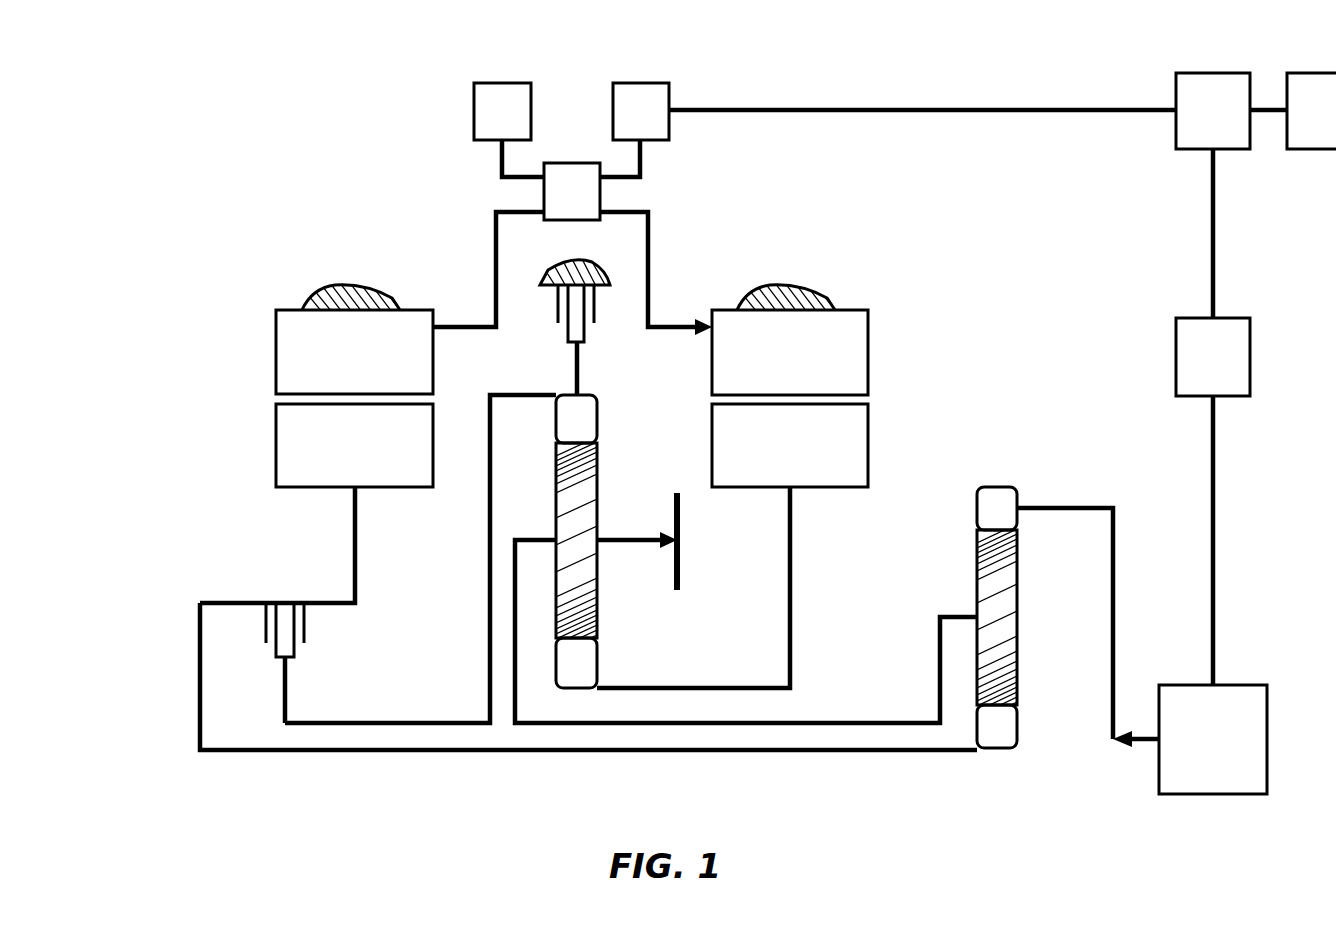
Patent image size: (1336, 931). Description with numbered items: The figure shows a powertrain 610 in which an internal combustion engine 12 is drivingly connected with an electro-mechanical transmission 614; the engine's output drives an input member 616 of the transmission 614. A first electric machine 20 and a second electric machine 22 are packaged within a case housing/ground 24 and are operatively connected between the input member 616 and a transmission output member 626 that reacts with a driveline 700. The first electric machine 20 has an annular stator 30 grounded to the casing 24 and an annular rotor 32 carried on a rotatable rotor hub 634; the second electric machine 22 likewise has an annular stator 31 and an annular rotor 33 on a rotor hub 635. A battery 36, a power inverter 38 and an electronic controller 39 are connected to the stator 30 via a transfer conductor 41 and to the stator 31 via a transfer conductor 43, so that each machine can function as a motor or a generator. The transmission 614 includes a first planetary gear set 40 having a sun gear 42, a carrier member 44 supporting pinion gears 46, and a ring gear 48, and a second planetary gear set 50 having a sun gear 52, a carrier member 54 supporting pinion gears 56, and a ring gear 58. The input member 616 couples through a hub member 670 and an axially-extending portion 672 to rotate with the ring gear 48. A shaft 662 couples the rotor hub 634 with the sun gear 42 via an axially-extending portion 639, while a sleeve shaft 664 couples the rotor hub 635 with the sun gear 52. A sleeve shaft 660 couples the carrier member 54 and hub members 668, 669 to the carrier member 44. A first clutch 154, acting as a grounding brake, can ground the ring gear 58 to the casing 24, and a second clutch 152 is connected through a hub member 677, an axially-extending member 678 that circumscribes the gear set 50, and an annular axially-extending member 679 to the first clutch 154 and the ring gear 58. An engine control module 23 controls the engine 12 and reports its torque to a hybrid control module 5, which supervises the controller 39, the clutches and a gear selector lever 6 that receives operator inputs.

The hybrid control module 5 is at (1213, 111).
The gear selector lever 6 is at (1311, 111).
The internal combustion engine 12 is at (1213, 739).
The first electric machine 20 is at (246, 413).
The second electric machine 22 is at (884, 390).
The engine control module 23 is at (1213, 357).
The case housing/ground 24 is at (343, 285).
The annular stator 30 is at (354, 352).
The annular stator 31 is at (790, 352).
The annular rotor 32 is at (354, 445).
The annular rotor 33 is at (790, 445).
The battery 36 is at (502, 111).
The power inverter 38 is at (572, 191).
The electronic controller 39 is at (641, 111).
The first planetary gear set 40 is at (1033, 593).
The transfer conductor 41 is at (467, 325).
The sun gear 42 is at (1017, 728).
The transfer conductor 43 is at (648, 290).
The carrier member 44 is at (957, 617).
The pinion gears 46 is at (1017, 576).
The ring gear 48 is at (995, 487).
The second planetary gear set 50 is at (622, 538).
The sun gear 52 is at (597, 667).
The carrier member 54 is at (538, 540).
The pinion gears 56 is at (597, 482).
The ring gear 58 is at (597, 422).
The second clutch 152 is at (316, 657).
The first clutch 154 is at (603, 318).
The powertrain 610 is at (918, 294).
The electro-mechanical transmission 614 is at (250, 294).
The input member 616 is at (1140, 746).
The transmission output member 626 is at (640, 545).
The rotor hub 634 is at (355, 563).
The rotor hub 635 is at (791, 540).
The axially-extending portion 639 is at (228, 603).
The sleeve shaft 660 is at (852, 723).
The shaft 662 is at (708, 750).
The sleeve shaft 664 is at (762, 688).
The hub member 668 is at (515, 590).
The hub member 669 is at (940, 648).
The hub member 670 is at (1113, 591).
The axially-extending portion 672 is at (1043, 508).
The hub member 677 is at (490, 553).
The axially-extending member 678 is at (538, 395).
The axially-extending member 679 is at (417, 723).
The driveline 700 is at (681, 532).